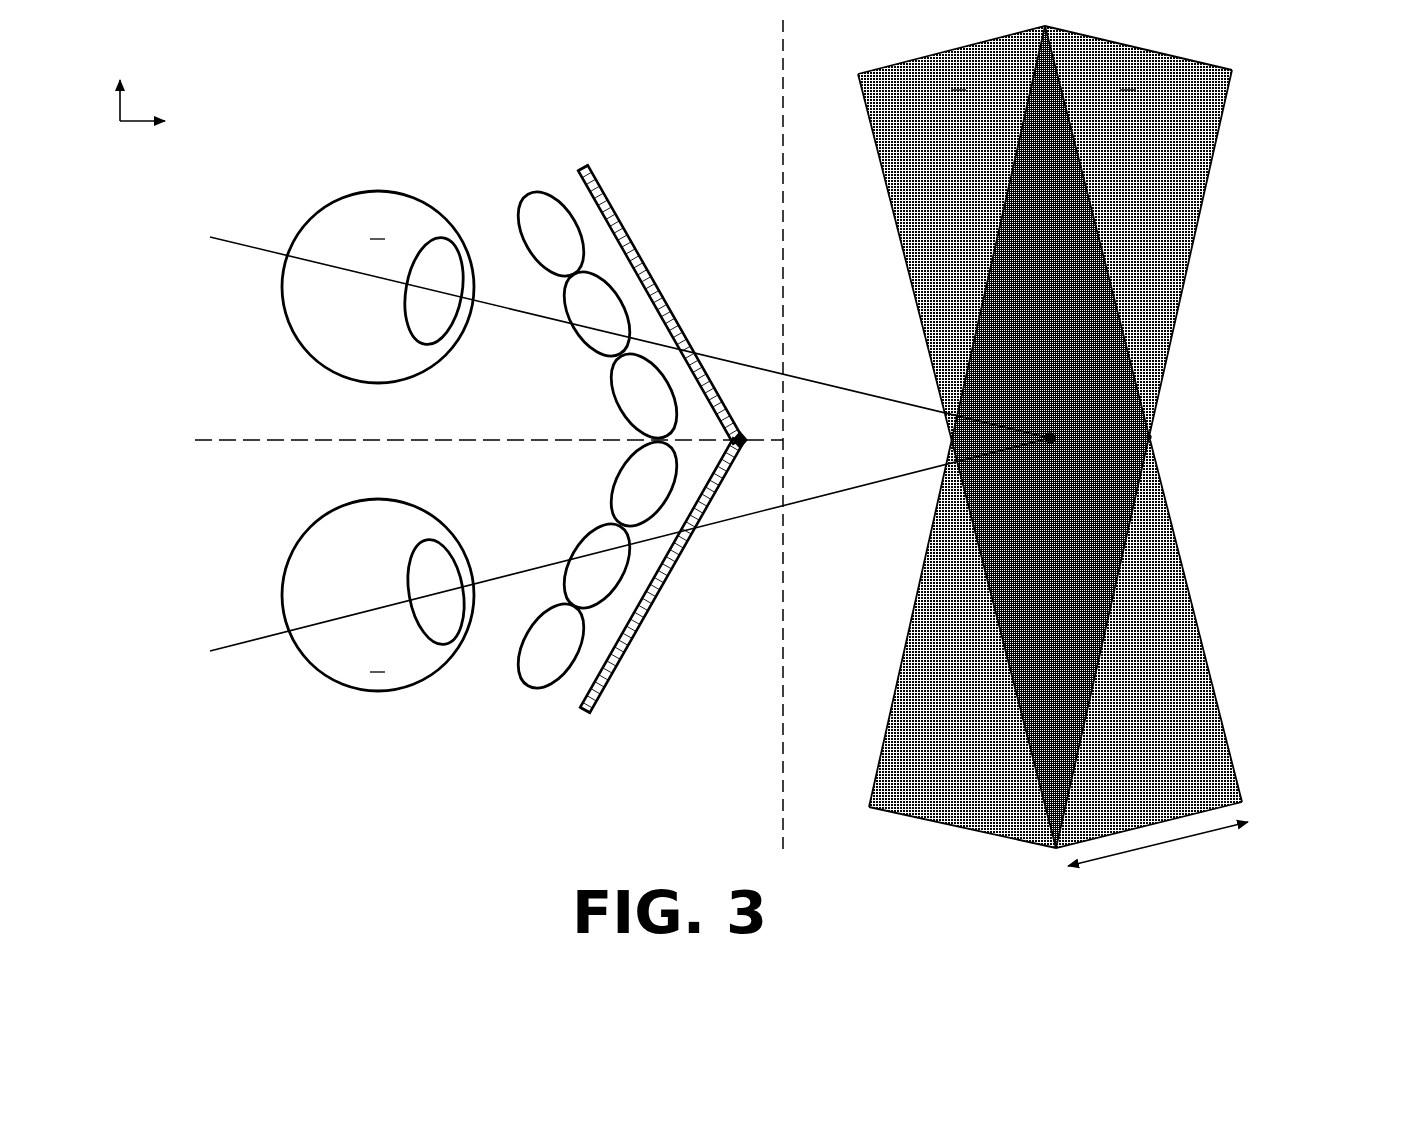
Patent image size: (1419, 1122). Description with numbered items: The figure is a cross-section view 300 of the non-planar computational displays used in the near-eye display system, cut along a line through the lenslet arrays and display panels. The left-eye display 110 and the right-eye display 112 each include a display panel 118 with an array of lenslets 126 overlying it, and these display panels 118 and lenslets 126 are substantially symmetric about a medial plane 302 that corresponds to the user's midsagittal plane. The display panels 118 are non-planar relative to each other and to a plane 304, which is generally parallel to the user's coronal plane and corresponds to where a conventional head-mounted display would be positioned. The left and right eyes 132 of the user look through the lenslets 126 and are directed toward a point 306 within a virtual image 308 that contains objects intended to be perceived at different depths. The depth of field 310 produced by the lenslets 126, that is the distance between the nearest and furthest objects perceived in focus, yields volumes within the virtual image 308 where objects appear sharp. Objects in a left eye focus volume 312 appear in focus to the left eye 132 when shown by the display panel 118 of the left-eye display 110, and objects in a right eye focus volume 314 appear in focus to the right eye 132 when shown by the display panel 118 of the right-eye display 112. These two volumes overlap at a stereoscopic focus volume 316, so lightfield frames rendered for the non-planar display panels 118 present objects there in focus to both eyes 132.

The cross-section view 300 is at (258, 59).
The medial plane 302 is at (223, 438).
The plane 304 is at (785, 303).
The eyes 132 is at (382, 192).
The lenslets 126 is at (541, 204).
The left-eye display 110 is at (658, 250).
The right-eye display 112 is at (672, 587).
The display panel 118 is at (598, 180).
The virtual image 308 is at (1342, 83).
The left eye focus volume 312 is at (875, 80).
The right eye focus volume 314 is at (1212, 80).
The point 306 is at (1058, 434).
The stereoscopic focus volume 316 is at (1130, 444).
The depth of field 310 is at (1157, 848).